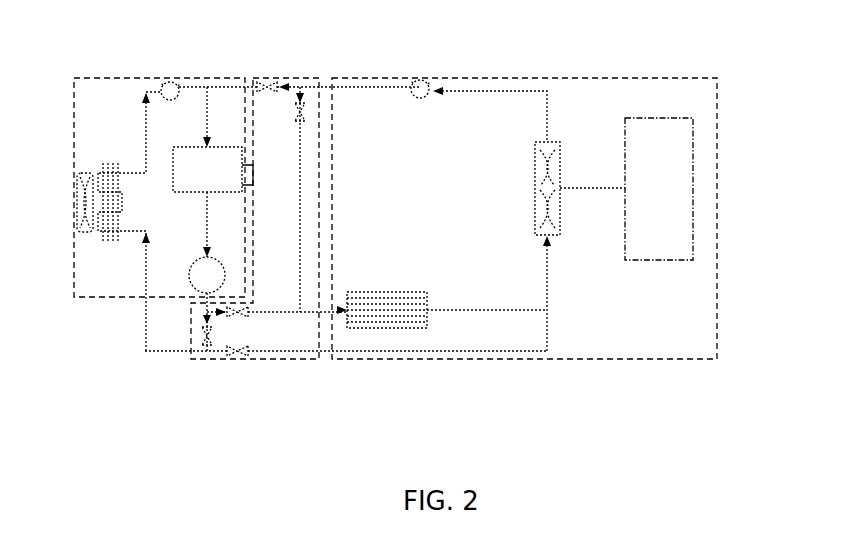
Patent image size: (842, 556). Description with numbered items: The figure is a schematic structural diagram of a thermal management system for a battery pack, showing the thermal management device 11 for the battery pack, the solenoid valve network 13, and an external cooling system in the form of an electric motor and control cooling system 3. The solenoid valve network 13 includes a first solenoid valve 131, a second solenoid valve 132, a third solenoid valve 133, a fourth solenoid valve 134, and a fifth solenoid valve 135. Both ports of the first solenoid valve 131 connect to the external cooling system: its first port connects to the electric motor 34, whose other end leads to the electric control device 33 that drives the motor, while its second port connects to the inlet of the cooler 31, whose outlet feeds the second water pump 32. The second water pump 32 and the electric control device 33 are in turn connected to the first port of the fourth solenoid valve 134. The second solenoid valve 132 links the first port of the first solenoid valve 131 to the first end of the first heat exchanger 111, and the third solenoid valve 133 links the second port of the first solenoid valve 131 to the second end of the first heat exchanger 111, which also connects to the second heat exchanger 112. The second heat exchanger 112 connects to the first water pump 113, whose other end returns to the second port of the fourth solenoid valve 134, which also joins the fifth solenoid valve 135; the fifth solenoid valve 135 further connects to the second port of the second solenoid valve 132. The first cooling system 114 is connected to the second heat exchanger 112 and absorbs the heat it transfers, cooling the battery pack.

The electric motor and control cooling system 3 is at (110, 77).
The cooler 31 is at (95, 236).
The second water pump 32 is at (172, 80).
The electric control device 33 is at (222, 145).
The electric motor 34 is at (192, 285).
The solenoid valve network 13 is at (303, 77).
The first solenoid valve 131 is at (212, 342).
The second solenoid valve 132 is at (237, 312).
The third solenoid valve 133 is at (238, 353).
The fourth solenoid valve 134 is at (265, 83).
The fifth solenoid valve 135 is at (303, 107).
The thermal management device for a battery pack 11 is at (570, 77).
The first heat exchanger 111 is at (412, 325).
The second heat exchanger 112 is at (560, 142).
The first water pump 113 is at (420, 80).
The first cooling system 114 is at (693, 193).